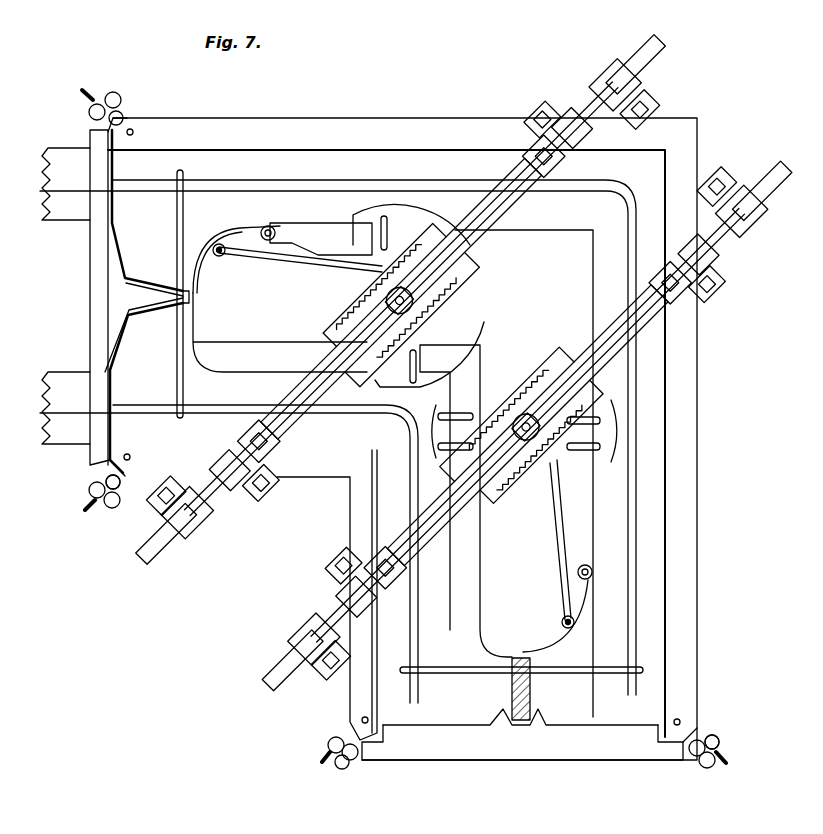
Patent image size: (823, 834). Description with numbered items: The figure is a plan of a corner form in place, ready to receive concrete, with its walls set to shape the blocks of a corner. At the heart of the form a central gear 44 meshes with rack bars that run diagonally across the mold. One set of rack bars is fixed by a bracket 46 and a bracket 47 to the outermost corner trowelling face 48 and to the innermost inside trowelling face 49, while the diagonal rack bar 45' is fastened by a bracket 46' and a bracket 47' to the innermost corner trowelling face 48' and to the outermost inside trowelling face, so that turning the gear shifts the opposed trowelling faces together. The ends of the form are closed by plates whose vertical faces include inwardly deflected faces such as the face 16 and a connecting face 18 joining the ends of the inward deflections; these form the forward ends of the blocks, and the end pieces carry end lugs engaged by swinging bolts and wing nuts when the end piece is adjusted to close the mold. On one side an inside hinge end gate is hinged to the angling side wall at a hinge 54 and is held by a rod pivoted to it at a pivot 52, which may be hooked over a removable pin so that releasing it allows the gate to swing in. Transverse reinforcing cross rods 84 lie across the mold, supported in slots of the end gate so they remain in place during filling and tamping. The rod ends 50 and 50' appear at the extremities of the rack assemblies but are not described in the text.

The vertical face 16 is at (112, 242).
The vertical face 18 is at (182, 297).
The central gear 44 is at (378, 284).
The diagonal rack bar 45' is at (464, 363).
The bracket 46 is at (598, 196).
The bracket 46' is at (467, 441).
The bracket 47 is at (364, 304).
The bracket 47' is at (522, 393).
The outermost corner trowelling face 48 is at (368, 439).
The innermost corner trowelling face 48' is at (229, 554).
The innermost inside trowelling face 49 is at (352, 441).
The rod end 50 is at (402, 314).
The rod end 50' is at (502, 438).
The pivot 52 is at (561, 623).
The hinge 54 is at (592, 572).
The cross rods 84 is at (177, 359).